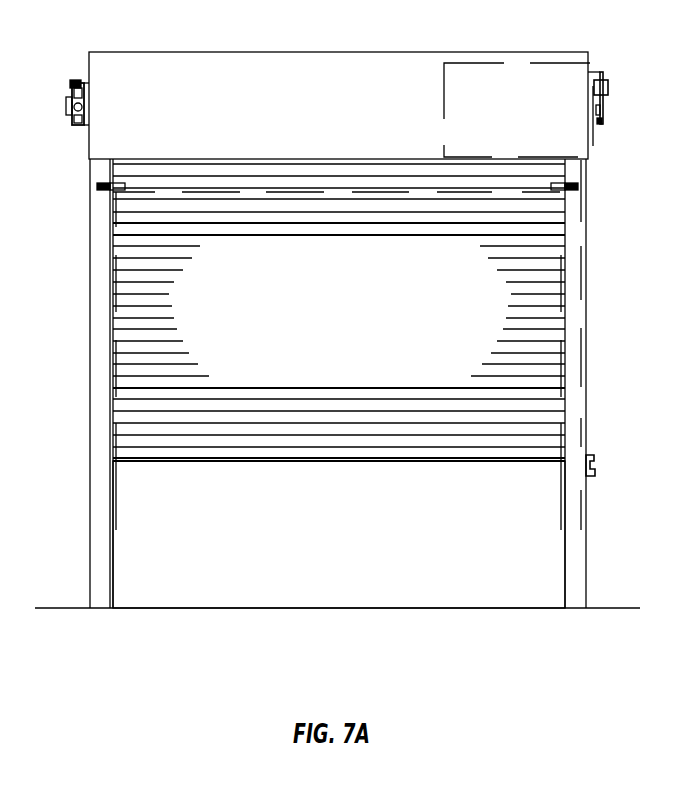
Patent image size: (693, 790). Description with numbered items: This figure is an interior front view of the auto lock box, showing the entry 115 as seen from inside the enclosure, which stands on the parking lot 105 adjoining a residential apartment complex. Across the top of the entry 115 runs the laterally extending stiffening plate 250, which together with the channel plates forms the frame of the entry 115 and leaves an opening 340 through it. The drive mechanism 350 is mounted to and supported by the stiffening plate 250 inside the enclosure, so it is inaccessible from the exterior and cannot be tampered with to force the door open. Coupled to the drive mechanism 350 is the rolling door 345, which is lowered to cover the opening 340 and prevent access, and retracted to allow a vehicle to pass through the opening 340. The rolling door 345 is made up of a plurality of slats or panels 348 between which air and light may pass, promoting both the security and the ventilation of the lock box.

The parking lot 105 is at (626, 608).
The entry 115 is at (122, 640).
The stiffening plate 250 is at (328, 114).
The drive mechanism 350 is at (538, 114).
The rolling door 345 is at (357, 310).
The slats or panels 348 is at (538, 398).
The opening 340 is at (357, 560).